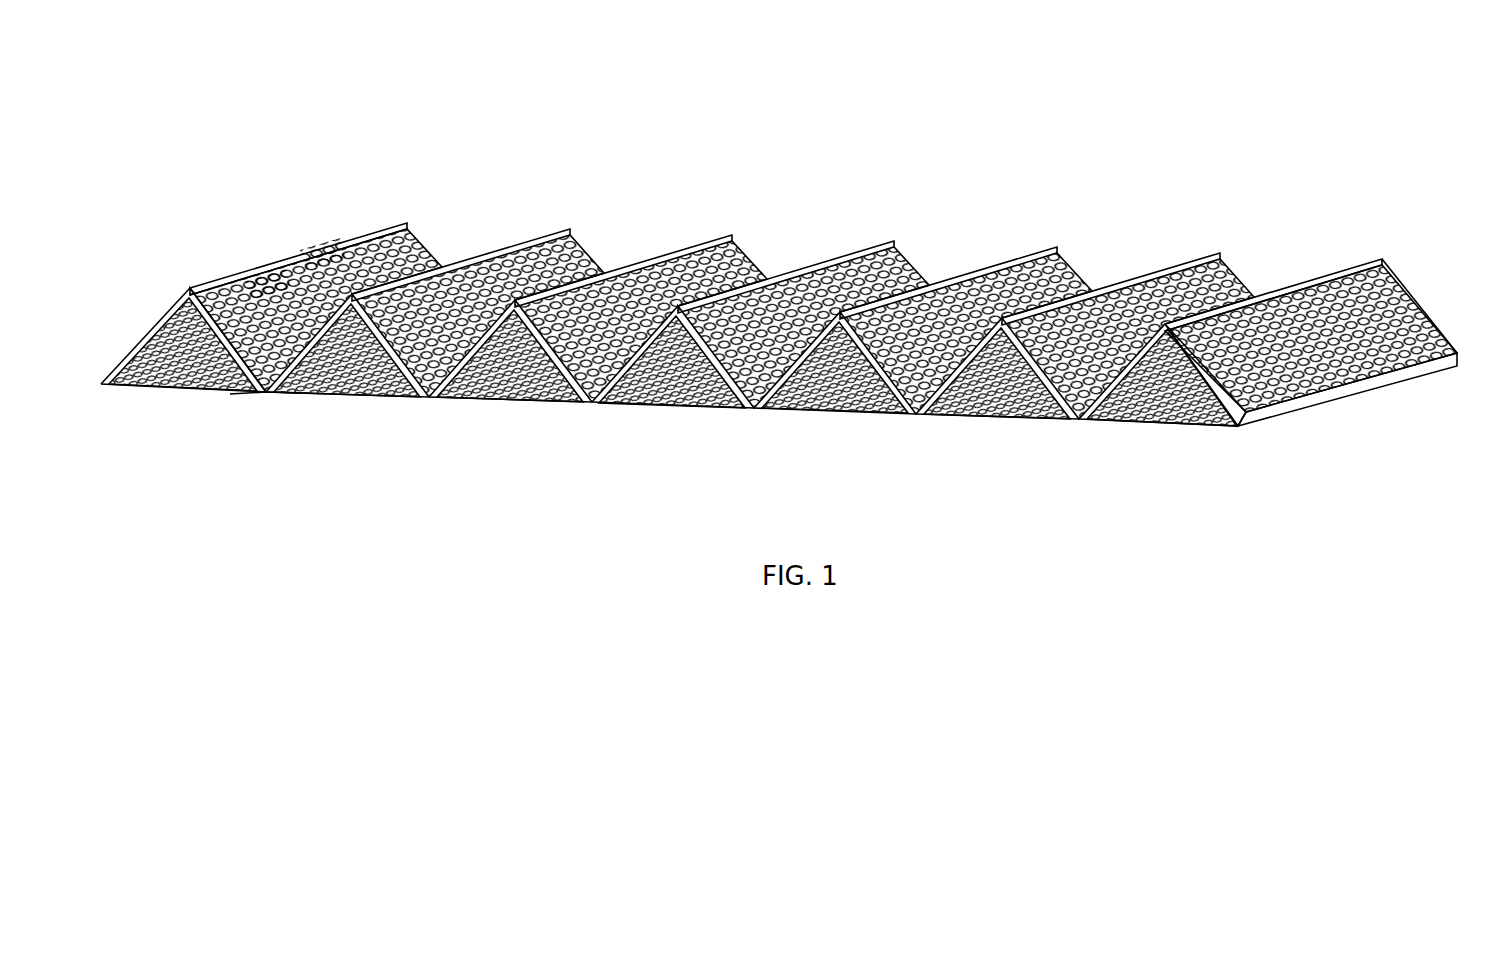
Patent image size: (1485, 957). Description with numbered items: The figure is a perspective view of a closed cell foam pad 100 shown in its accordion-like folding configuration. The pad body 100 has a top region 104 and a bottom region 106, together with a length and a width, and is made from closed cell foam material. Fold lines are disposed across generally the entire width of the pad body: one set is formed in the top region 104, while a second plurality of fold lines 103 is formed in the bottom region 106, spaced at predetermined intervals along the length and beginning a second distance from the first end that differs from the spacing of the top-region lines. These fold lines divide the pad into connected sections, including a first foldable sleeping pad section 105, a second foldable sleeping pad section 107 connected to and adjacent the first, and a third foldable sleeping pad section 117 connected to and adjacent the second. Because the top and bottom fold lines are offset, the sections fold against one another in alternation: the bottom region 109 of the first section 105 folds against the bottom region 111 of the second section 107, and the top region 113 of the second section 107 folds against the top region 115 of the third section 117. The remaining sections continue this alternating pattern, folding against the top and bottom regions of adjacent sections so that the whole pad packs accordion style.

The closed cell foam pad 100 is at (891, 90).
The second plurality of fold lines 103 is at (190, 288).
The top region 104 is at (1409, 290).
The first foldable sleeping pad section 105 is at (118, 393).
The bottom region 106 is at (1088, 420).
The second foldable sleeping pad section 107 is at (437, 248).
The bottom region of first foldable sleeping pad section 109 is at (167, 372).
The bottom region of second foldable sleeping pad section 111 is at (238, 360).
The top region of second foldable sleeping pad section 113 is at (308, 257).
The top region of third foldable sleeping pad section 115 is at (255, 284).
The third foldable sleeping pad section 117 is at (374, 376).